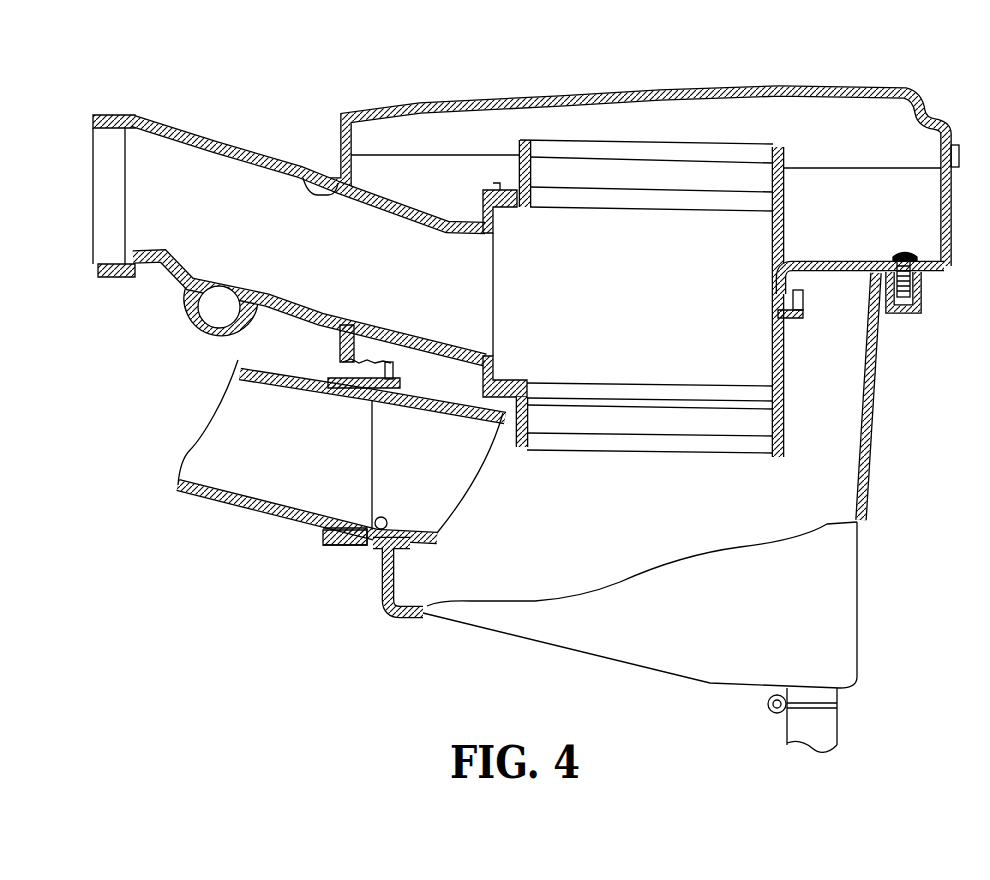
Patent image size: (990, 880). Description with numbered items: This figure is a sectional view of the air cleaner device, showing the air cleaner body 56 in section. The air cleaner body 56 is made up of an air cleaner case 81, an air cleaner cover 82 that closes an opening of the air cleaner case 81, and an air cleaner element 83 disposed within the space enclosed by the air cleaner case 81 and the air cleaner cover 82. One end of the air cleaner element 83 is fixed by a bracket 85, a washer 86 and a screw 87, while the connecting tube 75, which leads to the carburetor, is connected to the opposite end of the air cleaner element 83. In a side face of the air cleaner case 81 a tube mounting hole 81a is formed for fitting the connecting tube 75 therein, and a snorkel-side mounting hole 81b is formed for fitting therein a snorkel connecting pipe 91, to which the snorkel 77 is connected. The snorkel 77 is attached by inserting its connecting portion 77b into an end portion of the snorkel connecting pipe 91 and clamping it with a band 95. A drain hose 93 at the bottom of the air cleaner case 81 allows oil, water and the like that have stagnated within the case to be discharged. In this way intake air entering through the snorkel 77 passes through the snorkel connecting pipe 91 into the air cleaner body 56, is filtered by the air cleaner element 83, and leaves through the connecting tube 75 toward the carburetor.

The air cleaner body 56 is at (878, 388).
The connecting tube 75 is at (187, 138).
The snorkel 77 is at (230, 510).
The connecting portion 77b is at (323, 548).
The air cleaner case 81 is at (840, 587).
The tube mounting hole 81a is at (307, 170).
The snorkel-side mounting hole 81b is at (373, 545).
The air cleaner cover 82 is at (617, 94).
The air cleaner element 83 is at (633, 455).
The bracket 85 is at (813, 262).
The washer 86 is at (867, 255).
The screw 87 is at (903, 255).
The snorkel connecting pipe 91 is at (470, 490).
The drain hose 93 is at (830, 720).
The band 95 is at (350, 545).